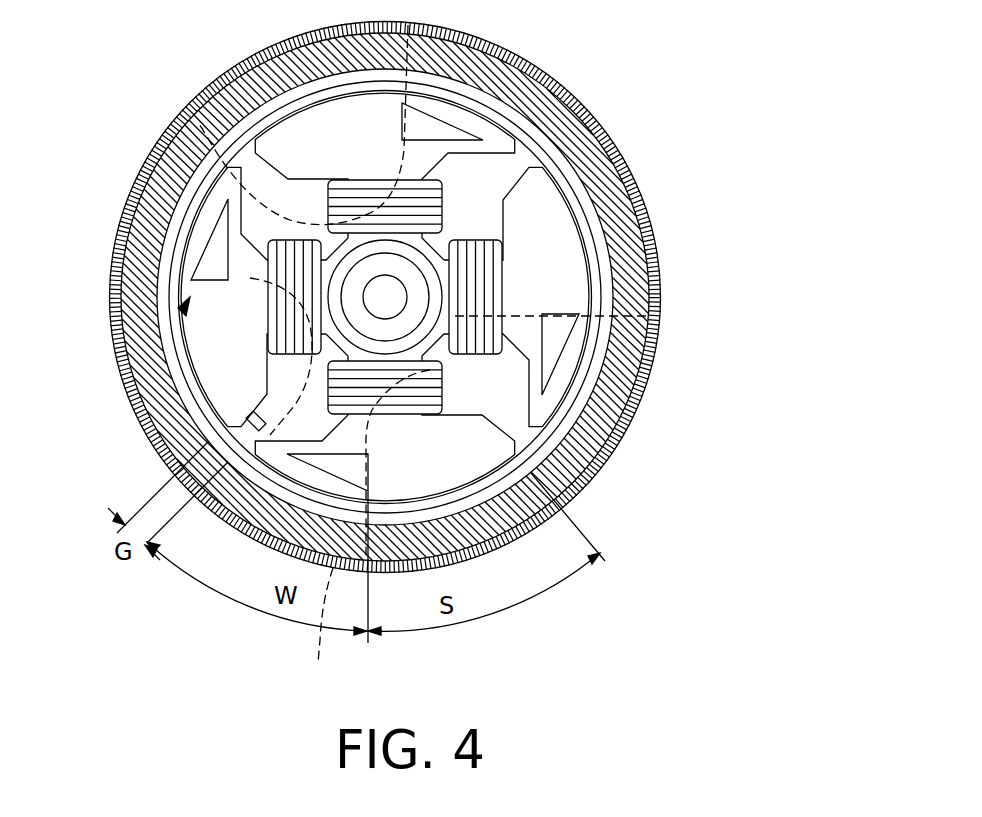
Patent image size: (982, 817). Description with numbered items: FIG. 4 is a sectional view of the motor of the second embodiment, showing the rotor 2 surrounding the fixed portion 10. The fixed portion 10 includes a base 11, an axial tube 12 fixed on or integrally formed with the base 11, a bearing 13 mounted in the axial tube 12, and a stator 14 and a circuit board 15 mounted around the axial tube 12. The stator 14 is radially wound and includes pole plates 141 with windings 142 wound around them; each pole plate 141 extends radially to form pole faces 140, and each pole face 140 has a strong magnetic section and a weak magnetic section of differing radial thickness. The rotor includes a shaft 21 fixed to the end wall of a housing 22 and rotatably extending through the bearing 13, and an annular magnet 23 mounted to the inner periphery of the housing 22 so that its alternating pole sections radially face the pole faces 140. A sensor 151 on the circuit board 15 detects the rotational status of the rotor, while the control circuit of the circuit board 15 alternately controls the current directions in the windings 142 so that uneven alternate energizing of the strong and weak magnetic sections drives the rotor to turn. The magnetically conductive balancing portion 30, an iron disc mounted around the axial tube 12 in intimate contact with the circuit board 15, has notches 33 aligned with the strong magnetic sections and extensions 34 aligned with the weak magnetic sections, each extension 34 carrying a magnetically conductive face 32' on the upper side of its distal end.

The rotor 2 is at (126, 18).
The shaft 21 is at (377, 295).
The housing 22 is at (182, 108).
The annular magnet 23 is at (213, 88).
The fixed portion 10 is at (826, 358).
The base 11 is at (438, 297).
The circuit board 15 is at (577, 490).
The axial tube 12 is at (548, 430).
The bearing 13 is at (513, 340).
The stator 14 is at (776, 356).
The pole plate 141 is at (580, 302).
The winding 142 is at (560, 345).
The pole face 140 is at (480, 547).
The sensor 151 is at (248, 424).
The magnetically conductive balancing portion 30 is at (250, 278).
The notch 33 is at (262, 402).
The extension 34 is at (245, 262).
The magnetically conductive face 32' is at (314, 634).